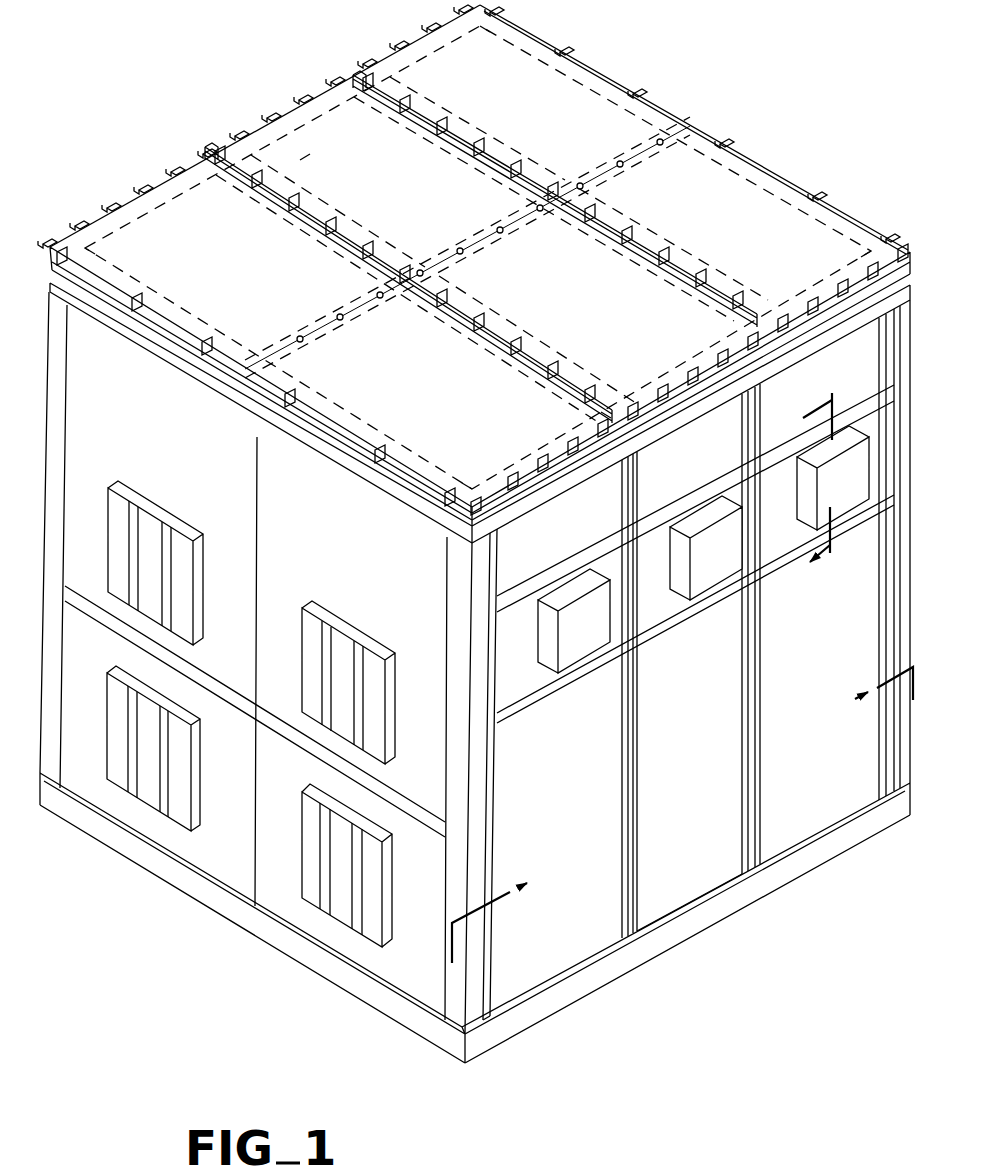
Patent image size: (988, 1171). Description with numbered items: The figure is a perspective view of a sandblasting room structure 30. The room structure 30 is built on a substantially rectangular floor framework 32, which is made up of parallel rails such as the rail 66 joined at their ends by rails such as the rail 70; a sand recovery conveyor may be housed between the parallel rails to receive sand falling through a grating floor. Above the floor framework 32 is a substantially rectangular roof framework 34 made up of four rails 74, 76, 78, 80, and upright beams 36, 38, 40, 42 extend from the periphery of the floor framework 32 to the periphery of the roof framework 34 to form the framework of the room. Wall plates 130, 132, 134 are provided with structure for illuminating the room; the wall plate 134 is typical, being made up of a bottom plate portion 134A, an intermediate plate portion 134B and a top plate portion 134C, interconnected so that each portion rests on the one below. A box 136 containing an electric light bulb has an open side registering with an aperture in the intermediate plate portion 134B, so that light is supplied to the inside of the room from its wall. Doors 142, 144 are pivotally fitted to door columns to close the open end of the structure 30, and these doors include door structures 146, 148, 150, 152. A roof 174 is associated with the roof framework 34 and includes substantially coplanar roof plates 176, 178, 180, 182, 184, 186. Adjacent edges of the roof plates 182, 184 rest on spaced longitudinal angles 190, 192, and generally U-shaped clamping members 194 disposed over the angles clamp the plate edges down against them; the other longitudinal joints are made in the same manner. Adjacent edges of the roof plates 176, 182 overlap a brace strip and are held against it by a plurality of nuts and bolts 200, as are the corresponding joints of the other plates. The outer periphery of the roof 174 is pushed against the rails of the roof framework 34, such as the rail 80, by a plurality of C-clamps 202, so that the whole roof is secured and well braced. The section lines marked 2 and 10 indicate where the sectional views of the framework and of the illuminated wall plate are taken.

The room structure 30 is at (208, 933).
The floor framework 32 is at (295, 958).
The roof framework 34 is at (138, 332).
The upright beam 36 is at (505, 870).
The upright beam 38 is at (623, 788).
The upright beam 40 is at (742, 710).
The upright beam 42 is at (880, 640).
The rail 66 is at (640, 957).
The rail 70 is at (140, 870).
The rail 74 is at (402, 500).
The rail 76 is at (145, 194).
The rail 78 is at (696, 120).
The rail 80 is at (512, 512).
The wall plate 130 is at (578, 937).
The wall plate 132 is at (708, 855).
The wall plate 134 is at (808, 802).
The bottom plate portion 134A is at (845, 616).
The intermediate plate portion 134B is at (770, 492).
The top plate portion 134C is at (822, 399).
The box 136 is at (807, 530).
The door 142 is at (105, 739).
The door 144 is at (299, 792).
The door structure 146 is at (197, 566).
The door structure 148 is at (197, 795).
The door structure 150 is at (393, 690).
The door structure 152 is at (393, 876).
The roof 174 is at (560, 92).
The roof plate 176 is at (225, 275).
The roof plate 178 is at (437, 205).
The roof plate 180 is at (555, 130).
The roof plate 182 is at (515, 430).
The roof plate 184 is at (585, 315).
The roof plate 186 is at (752, 245).
The longitudinal angle 190 is at (336, 237).
The longitudinal angle 192 is at (350, 224).
The clamping member 194 is at (520, 348).
The nuts and bolts 200 is at (690, 125).
The C-clamp 202 is at (292, 106).
The section line 2- 2 is at (664, 830).
The section line 10- 10 is at (834, 470).